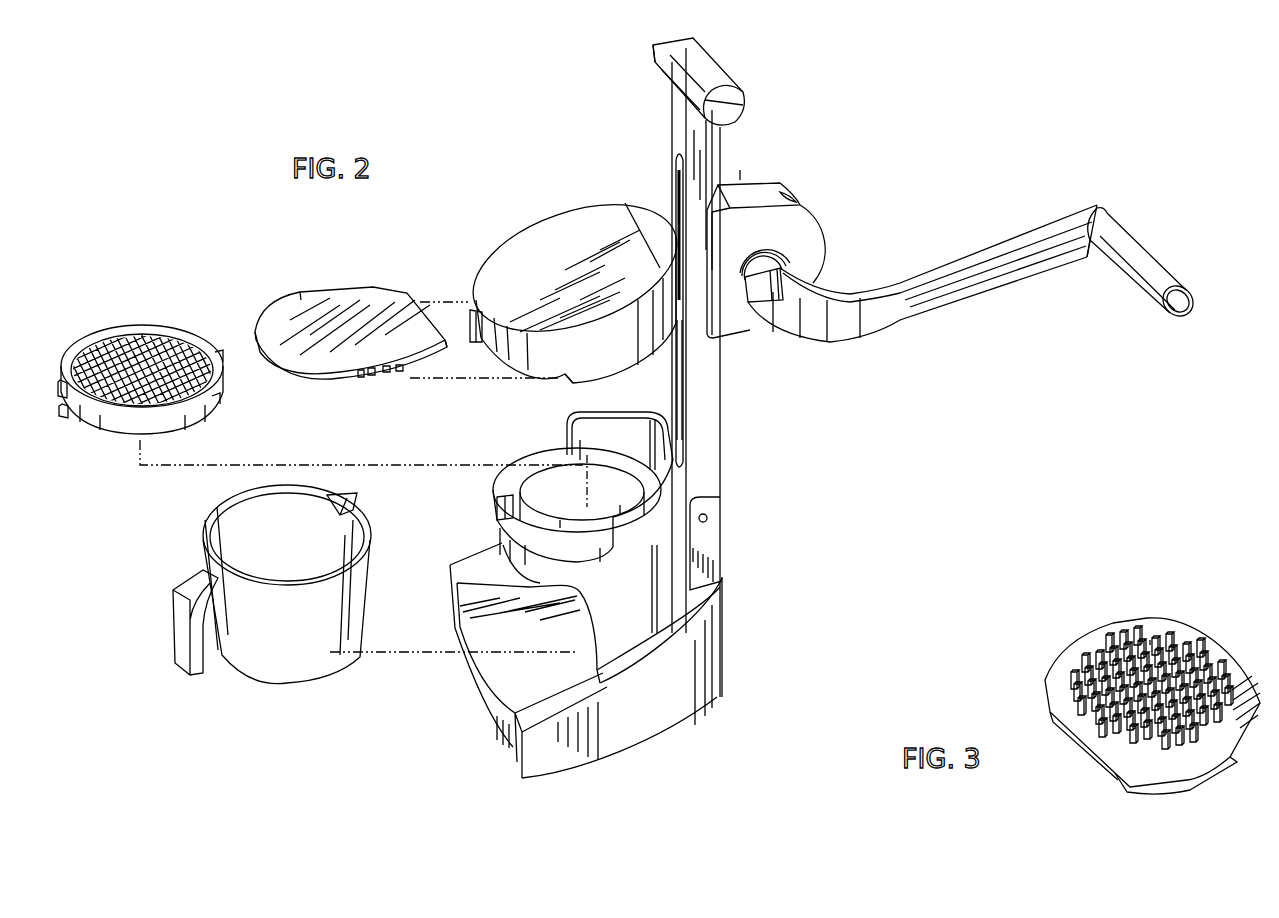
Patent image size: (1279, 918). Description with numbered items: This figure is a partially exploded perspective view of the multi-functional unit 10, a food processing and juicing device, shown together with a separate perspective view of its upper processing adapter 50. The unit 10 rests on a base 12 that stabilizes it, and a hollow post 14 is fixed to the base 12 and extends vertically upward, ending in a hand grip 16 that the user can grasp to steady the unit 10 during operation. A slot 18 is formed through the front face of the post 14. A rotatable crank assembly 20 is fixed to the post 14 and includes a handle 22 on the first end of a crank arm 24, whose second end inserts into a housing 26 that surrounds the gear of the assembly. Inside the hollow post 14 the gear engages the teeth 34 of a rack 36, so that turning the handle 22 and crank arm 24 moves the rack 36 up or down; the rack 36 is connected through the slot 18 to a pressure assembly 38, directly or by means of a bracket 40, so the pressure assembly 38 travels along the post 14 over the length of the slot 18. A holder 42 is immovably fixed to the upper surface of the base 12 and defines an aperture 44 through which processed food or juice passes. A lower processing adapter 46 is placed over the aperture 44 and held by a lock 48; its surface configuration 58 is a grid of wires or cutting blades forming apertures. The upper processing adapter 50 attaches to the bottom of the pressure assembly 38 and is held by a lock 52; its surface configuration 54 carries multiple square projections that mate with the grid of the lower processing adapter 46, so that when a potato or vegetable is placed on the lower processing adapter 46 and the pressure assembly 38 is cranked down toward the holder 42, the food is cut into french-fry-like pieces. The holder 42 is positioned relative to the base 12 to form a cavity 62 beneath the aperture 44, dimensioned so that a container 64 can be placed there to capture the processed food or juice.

In FIG. 2, the multi-functional unit 10 is at (440, 92).
In FIG. 2, the base 12 is at (706, 677).
In FIG. 2, the post 14 is at (712, 483).
In FIG. 2, the hand grip 16 is at (700, 43).
In FIG. 2, the slot 18 is at (684, 381).
In FIG. 2, the crank assembly 20 is at (843, 192).
In FIG. 2, the handle 22 is at (1120, 228).
In FIG. 2, the crank arm 24 is at (878, 320).
In FIG. 2, the housing 26 is at (805, 190).
In FIG. 2, the teeth 34 is at (677, 196).
In FIG. 2, the rack 36 is at (679, 380).
In FIG. 2, the pressure assembly 38 is at (545, 203).
In FIG. 2, the bracket 40 is at (732, 300).
In FIG. 2, the holder 42 is at (556, 424).
In FIG. 2, the aperture 44 is at (560, 488).
In FIG. 2, the lower processing adapter 46 is at (137, 324).
In FIG. 2, the lock 48 is at (495, 505).
In FIG. 2, the upper processing adapter 50 is at (312, 302).
In FIG. 3, the upper processing adapter 50 is at (1081, 597).
In FIG. 2, the lock 52 is at (474, 318).
In FIG. 2, the surface configuration 54 is at (377, 380).
In FIG. 3, the surface configuration 54 is at (1180, 624).
In FIG. 2, the surface configuration 58 is at (102, 344).
In FIG. 2, the cavity 62 is at (576, 602).
In FIG. 2, the container 64 is at (287, 662).